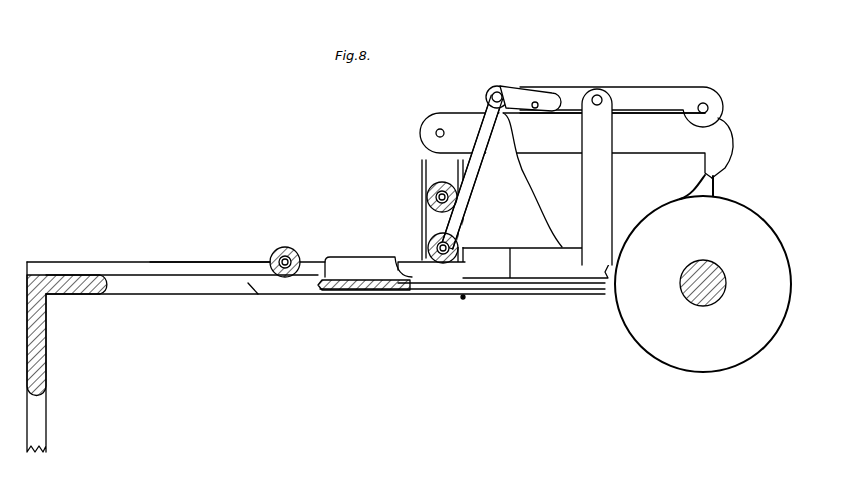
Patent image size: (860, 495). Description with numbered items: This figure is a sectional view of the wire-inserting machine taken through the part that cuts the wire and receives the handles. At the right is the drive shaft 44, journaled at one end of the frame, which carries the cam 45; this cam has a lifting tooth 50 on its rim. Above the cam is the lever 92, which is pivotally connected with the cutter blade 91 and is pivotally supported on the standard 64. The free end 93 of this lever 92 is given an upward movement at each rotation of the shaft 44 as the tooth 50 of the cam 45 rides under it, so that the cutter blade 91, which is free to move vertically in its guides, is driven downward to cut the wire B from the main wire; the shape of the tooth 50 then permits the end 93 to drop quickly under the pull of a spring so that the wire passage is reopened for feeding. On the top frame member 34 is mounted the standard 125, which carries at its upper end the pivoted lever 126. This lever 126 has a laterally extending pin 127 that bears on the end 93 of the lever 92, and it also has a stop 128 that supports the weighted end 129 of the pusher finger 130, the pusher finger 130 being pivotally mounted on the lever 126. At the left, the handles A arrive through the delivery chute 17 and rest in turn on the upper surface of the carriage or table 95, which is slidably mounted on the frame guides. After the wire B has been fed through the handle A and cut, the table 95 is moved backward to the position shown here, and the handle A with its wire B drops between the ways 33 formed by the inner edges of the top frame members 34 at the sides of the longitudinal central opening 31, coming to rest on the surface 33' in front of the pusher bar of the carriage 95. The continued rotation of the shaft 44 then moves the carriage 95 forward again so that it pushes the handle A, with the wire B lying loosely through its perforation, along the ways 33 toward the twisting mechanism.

The longitudinal central opening 31 is at (205, 292).
The way 33 is at (67, 321).
The surface 33' is at (248, 304).
The top frame member 34 is at (211, 263).
The handle A is at (286, 250).
The wire B is at (303, 265).
The delivery chute 17 is at (420, 166).
The cutter blade 91 is at (428, 195).
The lever 92 is at (441, 129).
The free end of lever 93 is at (724, 157).
The carriage 95 is at (565, 268).
The standard 125 is at (597, 177).
The pivoted lever 126 is at (643, 90).
The laterally extending pin 127 is at (708, 106).
The stop 128 is at (535, 108).
The weighted end 129 is at (521, 95).
The pusher finger 130 is at (475, 172).
The standard 64 is at (525, 205).
The lifting tooth 50 is at (715, 186).
The drive shaft 44 is at (723, 283).
The cam 45 is at (692, 368).